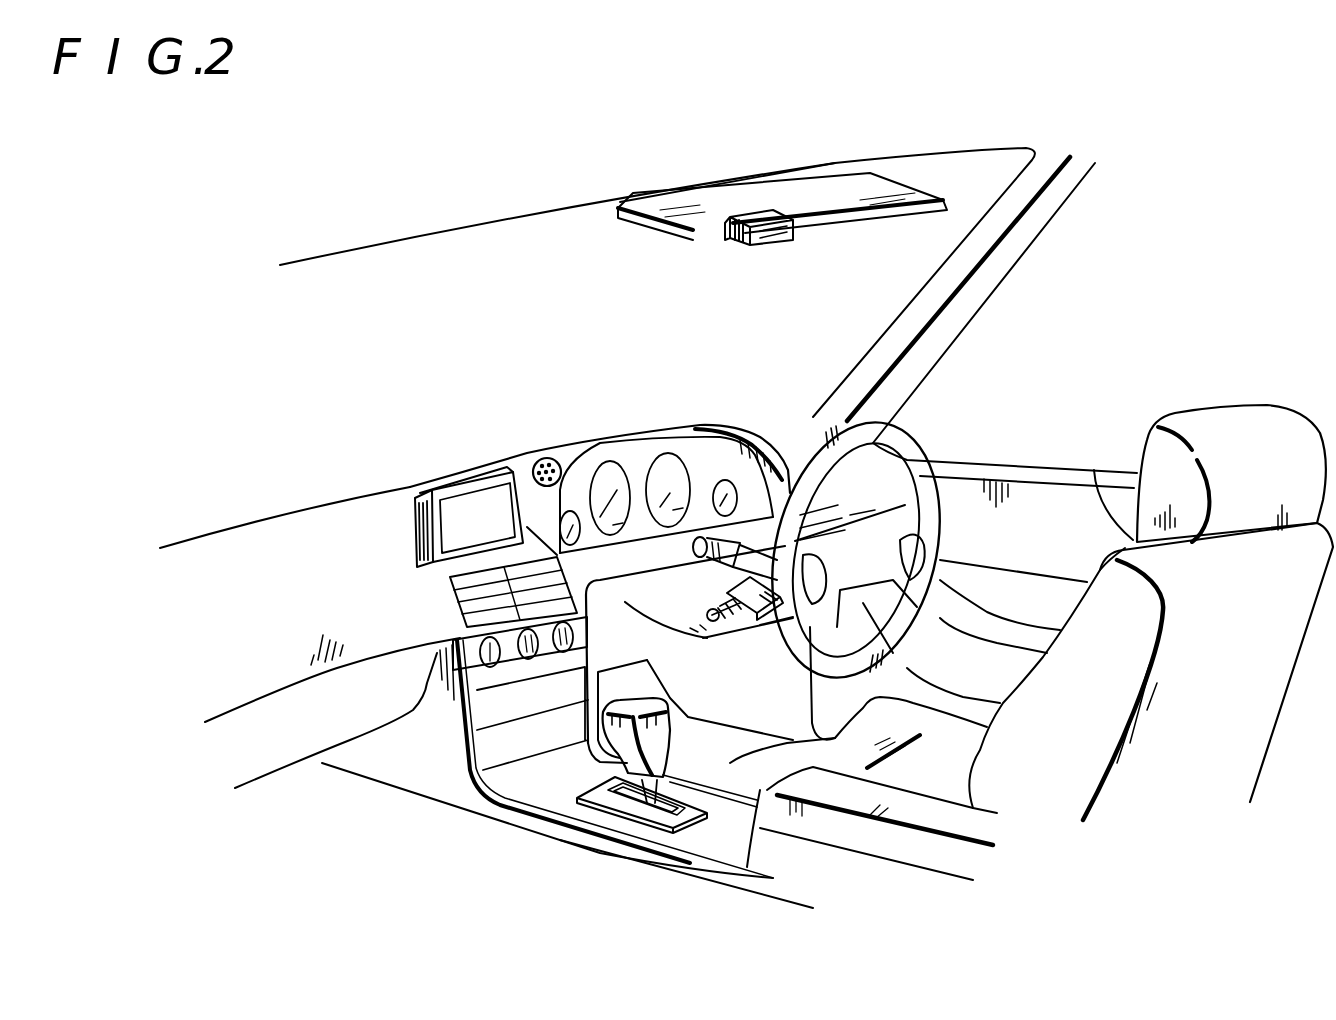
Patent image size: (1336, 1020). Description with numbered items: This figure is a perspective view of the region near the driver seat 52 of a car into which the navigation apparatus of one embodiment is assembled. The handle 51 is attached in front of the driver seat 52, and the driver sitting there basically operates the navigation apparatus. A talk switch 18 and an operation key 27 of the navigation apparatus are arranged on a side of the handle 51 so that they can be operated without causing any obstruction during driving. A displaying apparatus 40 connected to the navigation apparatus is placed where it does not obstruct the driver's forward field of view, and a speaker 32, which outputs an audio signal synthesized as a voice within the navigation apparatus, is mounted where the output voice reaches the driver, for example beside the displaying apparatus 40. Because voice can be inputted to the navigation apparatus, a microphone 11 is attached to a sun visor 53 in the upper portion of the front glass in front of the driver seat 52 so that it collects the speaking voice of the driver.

The microphone 11 is at (795, 233).
The sun visor 53 is at (648, 223).
The speaker 32 is at (552, 457).
The displaying apparatus 40 is at (417, 510).
The handle 51 is at (870, 443).
The driver seat 52 is at (1094, 470).
The talk switch 18 is at (710, 640).
The operation key 27 is at (766, 604).